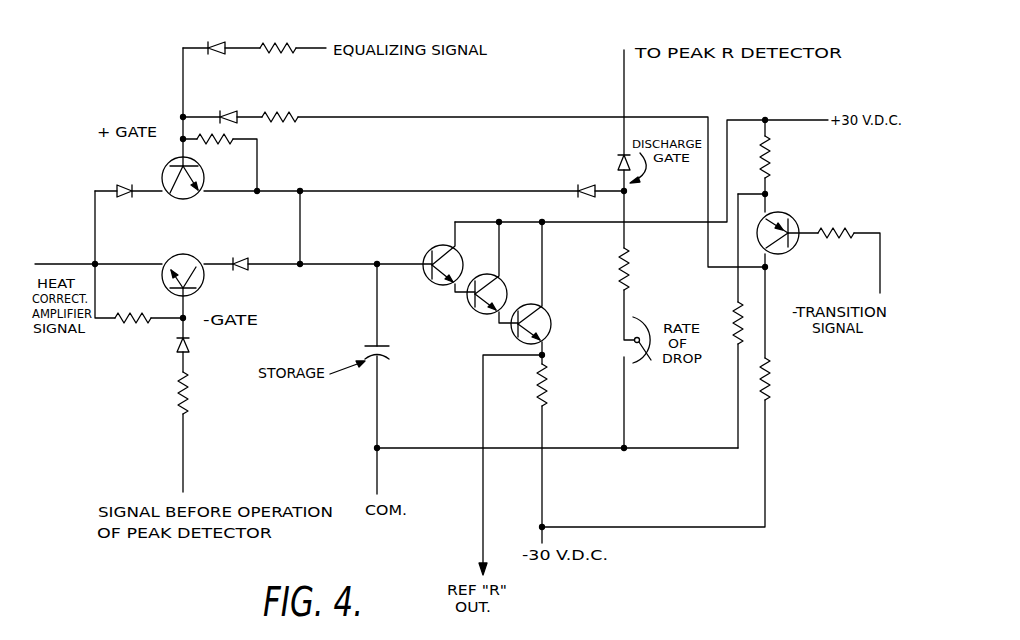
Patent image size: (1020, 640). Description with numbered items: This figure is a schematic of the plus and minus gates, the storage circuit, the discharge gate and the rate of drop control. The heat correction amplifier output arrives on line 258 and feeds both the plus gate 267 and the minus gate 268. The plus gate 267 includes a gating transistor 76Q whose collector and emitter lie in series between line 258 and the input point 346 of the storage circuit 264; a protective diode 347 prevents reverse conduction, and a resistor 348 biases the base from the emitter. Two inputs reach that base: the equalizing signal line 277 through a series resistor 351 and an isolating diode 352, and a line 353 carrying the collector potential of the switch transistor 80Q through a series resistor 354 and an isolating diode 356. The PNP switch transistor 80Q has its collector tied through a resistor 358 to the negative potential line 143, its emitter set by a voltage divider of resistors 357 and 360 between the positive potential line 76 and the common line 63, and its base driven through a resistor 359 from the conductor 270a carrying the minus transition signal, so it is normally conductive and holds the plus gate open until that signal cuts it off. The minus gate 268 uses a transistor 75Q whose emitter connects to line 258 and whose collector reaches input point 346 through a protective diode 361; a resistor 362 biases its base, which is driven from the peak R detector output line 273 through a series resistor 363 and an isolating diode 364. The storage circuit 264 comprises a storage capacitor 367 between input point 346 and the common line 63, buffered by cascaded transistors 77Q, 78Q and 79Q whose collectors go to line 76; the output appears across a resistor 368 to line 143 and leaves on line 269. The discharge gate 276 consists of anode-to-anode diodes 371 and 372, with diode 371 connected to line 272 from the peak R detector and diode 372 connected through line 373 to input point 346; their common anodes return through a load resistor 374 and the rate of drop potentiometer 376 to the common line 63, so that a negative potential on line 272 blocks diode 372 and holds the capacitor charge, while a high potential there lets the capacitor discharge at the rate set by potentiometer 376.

The isolating diode 352 is at (213, 42).
The series resistor 351 is at (268, 43).
The equalizing signal line 277 is at (325, 47).
The isolating diode 356 is at (230, 110).
The series resistor 354 is at (287, 112).
The line 353 is at (471, 116).
The resistor 348 is at (213, 144).
The gating transistor 76Q is at (190, 200).
The protective diode 347 is at (120, 196).
The plus gate 267 is at (102, 154).
The line 373 is at (408, 191).
The diode 372 is at (580, 200).
The output line 258 is at (77, 262).
The resistor 362 is at (152, 315).
The minus gate 268 is at (150, 336).
The minus gate transistor 75Q is at (202, 290).
The protective diode 361 is at (238, 258).
The isolating diode 364 is at (192, 347).
The series resistor 363 is at (187, 388).
The output line 273 is at (184, 425).
The input point 346 is at (377, 264).
The storage circuit 264 is at (364, 321).
The storage capacitor 367 is at (381, 359).
The transistor 77Q is at (445, 246).
The transistor 78Q is at (476, 310).
The transistor 79Q is at (552, 318).
The resistor 368 is at (547, 392).
The line 269 is at (484, 510).
The common line 63 is at (403, 450).
The negative potential line 143 is at (673, 531).
The line 272 is at (627, 92).
The discharge gate 276 is at (600, 150).
The diode 371 is at (617, 160).
The load resistor 374 is at (633, 260).
The rate of drop potentiometer 376 is at (637, 366).
The resistor 360 is at (737, 312).
The positive potential line 76 is at (810, 118).
The resistor 357 is at (772, 152).
The switch transistor 80Q is at (782, 212).
The resistor 359 is at (840, 230).
The conductor 270a is at (880, 270).
The resistor 358 is at (771, 381).